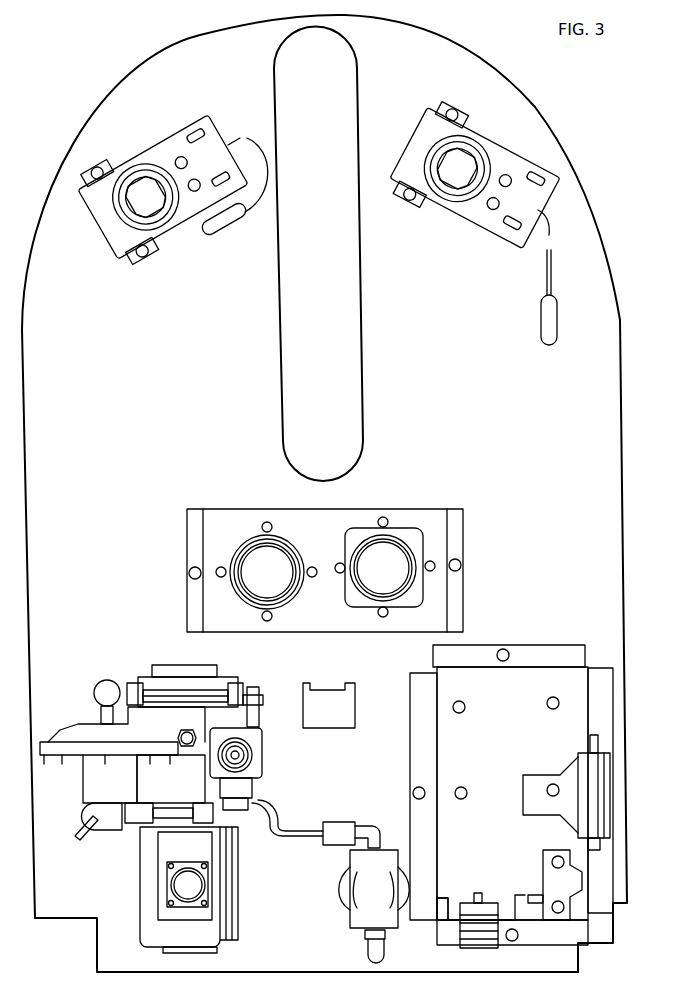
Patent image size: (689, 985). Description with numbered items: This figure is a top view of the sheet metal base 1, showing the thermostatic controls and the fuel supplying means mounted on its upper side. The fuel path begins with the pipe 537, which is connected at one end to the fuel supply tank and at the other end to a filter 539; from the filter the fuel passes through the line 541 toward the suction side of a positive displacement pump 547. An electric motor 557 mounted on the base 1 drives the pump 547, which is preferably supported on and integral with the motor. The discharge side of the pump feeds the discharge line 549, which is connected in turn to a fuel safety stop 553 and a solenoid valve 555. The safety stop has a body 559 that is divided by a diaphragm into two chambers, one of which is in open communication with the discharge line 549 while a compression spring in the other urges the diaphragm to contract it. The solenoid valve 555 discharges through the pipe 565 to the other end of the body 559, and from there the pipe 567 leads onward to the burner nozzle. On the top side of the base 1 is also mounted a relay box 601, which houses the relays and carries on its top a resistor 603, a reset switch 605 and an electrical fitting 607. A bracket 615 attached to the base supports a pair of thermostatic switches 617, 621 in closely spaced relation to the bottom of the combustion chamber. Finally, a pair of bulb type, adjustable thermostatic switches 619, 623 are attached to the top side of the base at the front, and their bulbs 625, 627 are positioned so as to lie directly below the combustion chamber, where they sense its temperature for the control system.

The sheet metal base 1 is at (610, 408).
The pipe 537 is at (368, 946).
The filter 539 is at (348, 892).
The line 541 is at (284, 836).
The positive displacement pump 547 is at (210, 682).
The discharge line 549 is at (160, 693).
The fuel safety stop 553 is at (78, 730).
The solenoid valve 555 is at (264, 745).
The electric motor 557 is at (233, 895).
The body 559 is at (88, 783).
The pipe 565 is at (162, 813).
The pipe 567 is at (88, 832).
The relay box 601 is at (533, 652).
The resistor 603 is at (597, 850).
The reset switch 605 is at (540, 895).
The electrical fitting 607 is at (470, 910).
The bracket 615 is at (440, 525).
The thermostatic switch 617 is at (400, 578).
The bulb type adjustable thermostatic switch 619 is at (140, 148).
The thermostatic switch 621 is at (283, 582).
The bulb type adjustable thermostatic switch 623 is at (468, 130).
The bulb 625 is at (212, 232).
The bulb 627 is at (556, 308).